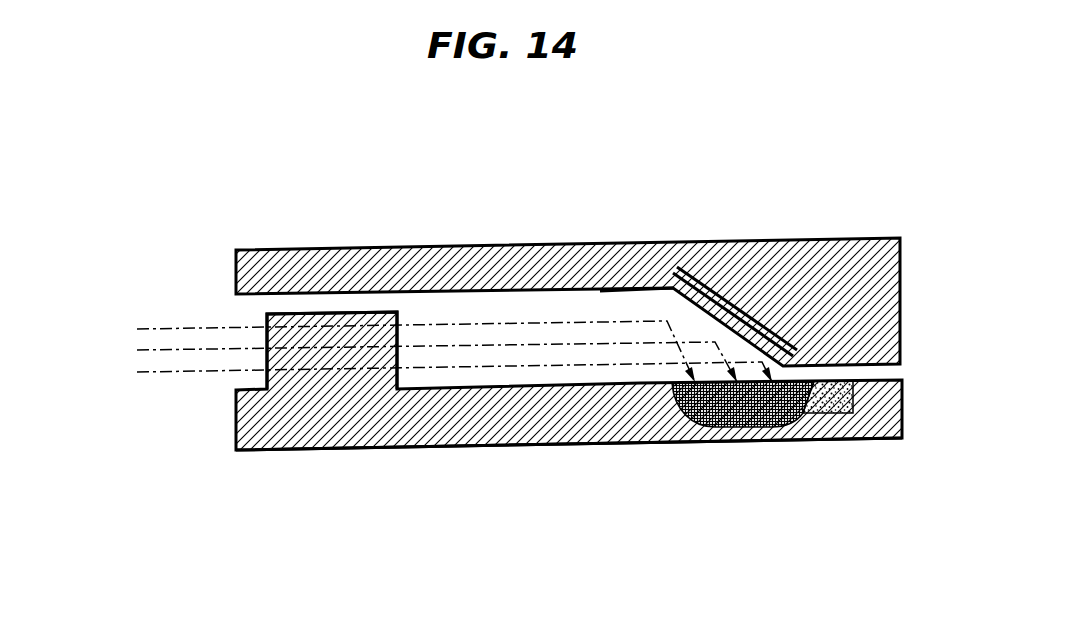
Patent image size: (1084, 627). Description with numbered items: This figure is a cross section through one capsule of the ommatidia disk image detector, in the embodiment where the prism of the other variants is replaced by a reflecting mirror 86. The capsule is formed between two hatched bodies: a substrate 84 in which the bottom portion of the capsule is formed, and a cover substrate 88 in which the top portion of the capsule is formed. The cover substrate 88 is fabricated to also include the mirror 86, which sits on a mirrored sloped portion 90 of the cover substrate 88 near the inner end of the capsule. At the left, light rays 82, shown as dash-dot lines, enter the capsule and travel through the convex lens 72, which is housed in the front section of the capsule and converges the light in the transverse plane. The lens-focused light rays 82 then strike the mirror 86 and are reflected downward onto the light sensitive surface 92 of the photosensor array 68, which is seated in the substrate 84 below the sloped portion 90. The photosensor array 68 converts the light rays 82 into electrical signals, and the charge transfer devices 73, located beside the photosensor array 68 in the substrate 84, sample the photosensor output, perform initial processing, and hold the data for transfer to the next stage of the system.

The photosensor array 68 is at (753, 413).
The lens 72 is at (323, 313).
The charge transfer devices 73 is at (840, 381).
The light rays 82 is at (192, 329).
The substrate 84 is at (508, 430).
The reflecting mirror 86 is at (733, 292).
The cover substrate 88 is at (541, 254).
The mirrored sloped portion 90 is at (677, 289).
The light sensitive surface 92 is at (649, 383).